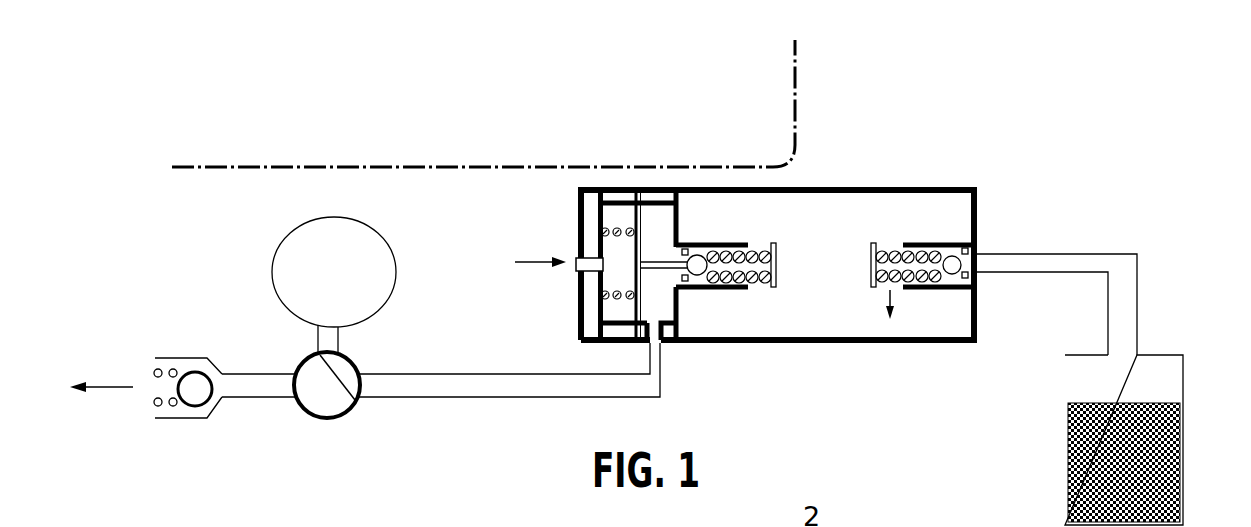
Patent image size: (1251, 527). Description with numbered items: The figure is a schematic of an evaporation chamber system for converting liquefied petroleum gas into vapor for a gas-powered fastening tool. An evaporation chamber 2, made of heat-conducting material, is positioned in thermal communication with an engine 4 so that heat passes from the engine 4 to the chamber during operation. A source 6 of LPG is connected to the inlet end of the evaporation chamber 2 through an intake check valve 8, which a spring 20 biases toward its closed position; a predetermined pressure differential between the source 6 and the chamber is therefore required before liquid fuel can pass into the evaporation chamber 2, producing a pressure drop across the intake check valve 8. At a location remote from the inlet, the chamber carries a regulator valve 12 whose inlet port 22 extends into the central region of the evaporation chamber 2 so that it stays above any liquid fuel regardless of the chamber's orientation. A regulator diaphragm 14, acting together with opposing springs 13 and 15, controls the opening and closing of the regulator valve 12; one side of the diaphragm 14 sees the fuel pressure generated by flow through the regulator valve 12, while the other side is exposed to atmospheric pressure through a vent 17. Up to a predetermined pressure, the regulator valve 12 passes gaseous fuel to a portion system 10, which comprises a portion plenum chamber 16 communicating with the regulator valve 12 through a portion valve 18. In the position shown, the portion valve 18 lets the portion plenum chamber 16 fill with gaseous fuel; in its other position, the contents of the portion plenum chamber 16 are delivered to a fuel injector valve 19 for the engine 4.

The evaporation chamber 2 is at (826, 178).
The engine 4 is at (445, 135).
The source of LPG 6 is at (1185, 468).
The intake check valve 8 is at (952, 255).
The portion system 10 is at (365, 339).
The regulator valve 12 is at (690, 283).
The spring 13 is at (727, 250).
The regulator diaphragm 14 is at (637, 262).
The spring 15 is at (614, 230).
The portion plenum chamber 16 is at (394, 285).
The vent 17 is at (582, 266).
The portion valve 18 is at (358, 368).
The fuel injector valve 19 is at (190, 406).
The spring 20 is at (890, 250).
The inlet port 22 is at (735, 290).